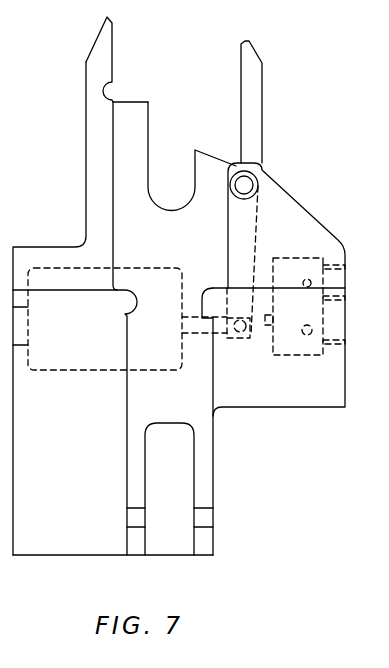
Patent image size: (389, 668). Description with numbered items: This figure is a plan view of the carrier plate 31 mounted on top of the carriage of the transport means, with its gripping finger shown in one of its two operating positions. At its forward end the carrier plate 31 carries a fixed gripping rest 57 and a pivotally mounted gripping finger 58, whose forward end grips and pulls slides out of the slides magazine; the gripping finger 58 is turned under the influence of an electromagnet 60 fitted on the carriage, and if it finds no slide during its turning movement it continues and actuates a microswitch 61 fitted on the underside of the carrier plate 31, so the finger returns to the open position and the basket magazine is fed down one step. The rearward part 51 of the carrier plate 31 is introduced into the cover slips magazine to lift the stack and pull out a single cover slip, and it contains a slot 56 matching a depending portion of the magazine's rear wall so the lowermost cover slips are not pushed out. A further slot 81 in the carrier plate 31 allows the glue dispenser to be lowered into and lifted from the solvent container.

The carrier plate 31 is at (280, 412).
The rearward part 51 is at (132, 462).
The slot 56 is at (163, 533).
The gripping rest 57 is at (97, 68).
The gripping finger 58 is at (252, 80).
The electromagnet 60 is at (53, 272).
The microswitch 61 is at (298, 267).
The slot 81 is at (170, 158).